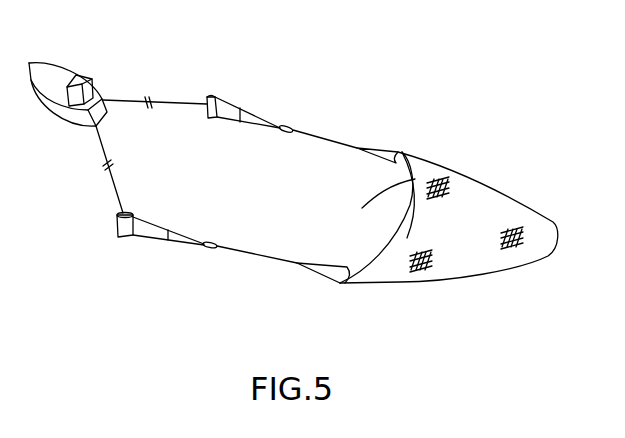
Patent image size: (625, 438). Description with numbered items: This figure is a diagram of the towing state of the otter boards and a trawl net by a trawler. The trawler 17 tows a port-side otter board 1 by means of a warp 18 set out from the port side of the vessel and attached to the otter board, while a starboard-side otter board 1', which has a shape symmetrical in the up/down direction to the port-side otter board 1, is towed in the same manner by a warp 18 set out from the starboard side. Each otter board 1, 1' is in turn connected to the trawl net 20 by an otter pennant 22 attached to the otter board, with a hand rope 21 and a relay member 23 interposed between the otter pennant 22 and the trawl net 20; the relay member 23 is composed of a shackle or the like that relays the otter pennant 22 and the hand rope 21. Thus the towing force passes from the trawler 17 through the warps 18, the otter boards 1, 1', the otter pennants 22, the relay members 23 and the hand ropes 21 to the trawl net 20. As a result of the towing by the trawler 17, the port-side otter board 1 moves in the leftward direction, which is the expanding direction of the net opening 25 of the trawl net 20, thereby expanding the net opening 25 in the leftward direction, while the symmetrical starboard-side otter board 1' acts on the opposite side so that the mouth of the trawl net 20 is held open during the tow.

The trawler 17 is at (57, 73).
The warp 18 is at (127, 100).
The starboard-side otter board 1' is at (206, 85).
The otter board 1 is at (105, 230).
The hand rope 21 is at (332, 140).
The otter pennant 22 is at (252, 127).
The relay member 23 is at (288, 127).
The trawl net 20 is at (480, 237).
The net opening 25 is at (362, 208).